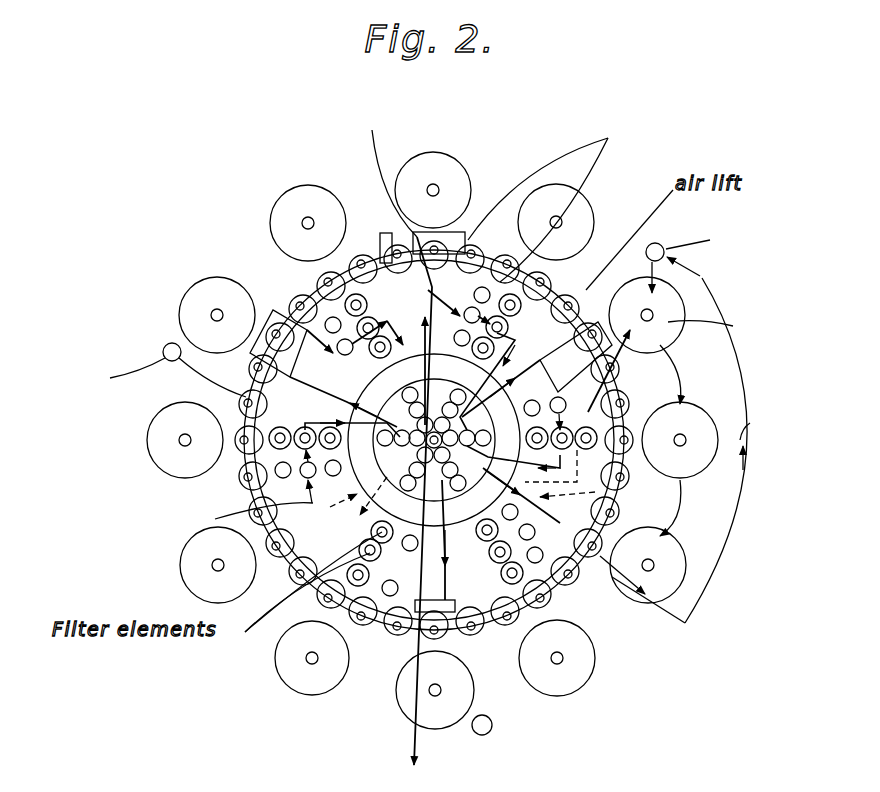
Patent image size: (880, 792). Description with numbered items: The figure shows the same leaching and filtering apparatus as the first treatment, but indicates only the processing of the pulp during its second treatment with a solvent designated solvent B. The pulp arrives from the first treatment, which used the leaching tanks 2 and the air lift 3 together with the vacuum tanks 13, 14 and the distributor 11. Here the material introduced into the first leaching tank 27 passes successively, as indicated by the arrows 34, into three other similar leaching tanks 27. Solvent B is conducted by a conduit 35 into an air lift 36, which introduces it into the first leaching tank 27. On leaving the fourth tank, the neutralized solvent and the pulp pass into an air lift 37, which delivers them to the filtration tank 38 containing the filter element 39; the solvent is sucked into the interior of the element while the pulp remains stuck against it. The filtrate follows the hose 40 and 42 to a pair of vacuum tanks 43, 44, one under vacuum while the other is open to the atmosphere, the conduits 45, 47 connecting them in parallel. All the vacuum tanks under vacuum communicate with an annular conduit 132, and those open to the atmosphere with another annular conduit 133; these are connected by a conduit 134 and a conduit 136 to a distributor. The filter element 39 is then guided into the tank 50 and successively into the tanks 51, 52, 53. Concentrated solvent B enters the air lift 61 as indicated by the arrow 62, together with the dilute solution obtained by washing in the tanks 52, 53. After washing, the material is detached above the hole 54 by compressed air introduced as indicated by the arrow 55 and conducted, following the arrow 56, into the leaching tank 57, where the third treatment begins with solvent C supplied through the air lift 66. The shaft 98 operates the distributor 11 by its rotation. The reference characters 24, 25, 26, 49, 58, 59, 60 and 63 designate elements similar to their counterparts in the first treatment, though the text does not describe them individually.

The leaching tank 2 is at (295, 200).
The air lift 3 is at (168, 345).
The distributor 11 is at (482, 410).
The vacuum tank 13 is at (548, 272).
The vacuum tank 14 is at (492, 258).
The valve 24 is at (565, 465).
The pipe 25 is at (567, 492).
The pipe 26 is at (591, 371).
The leaching tank 27 is at (683, 338).
The arrows 34 is at (650, 266).
The conduit 35 is at (712, 304).
The air lift 36 is at (656, 243).
The air lift 37 is at (525, 511).
The filtration tank 38 is at (477, 576).
The filter element 39 is at (476, 599).
The hose 40 is at (433, 441).
The hose 42 is at (438, 458).
The vacuum tank 43 is at (470, 258).
The vacuum tank 44 is at (475, 645).
The conduit 45 is at (434, 435).
The conduit 47 is at (470, 245).
The discharge pipe 49 is at (410, 738).
The tank 50 is at (551, 380).
The tank 51 is at (508, 330).
The filtration tank 52 is at (355, 349).
The filtration tank 53 is at (303, 428).
The hole 54 is at (392, 547).
The arrow 55 is at (353, 509).
The arrow 56 is at (455, 668).
The leaching tank 57 is at (440, 718).
The compressed air pipe 58 is at (181, 517).
The pipe 59 is at (298, 481).
The pipe 60 is at (323, 342).
The air lift 61 is at (459, 300).
The arrow 62 is at (387, 322).
The pipe 63 is at (567, 412).
The air lift 66 is at (492, 727).
The shaft 98 is at (425, 444).
The annular conduit 132 is at (378, 250).
The annular conduit 133 is at (385, 294).
The conduit 134 is at (380, 236).
The conduit 136 is at (304, 430).